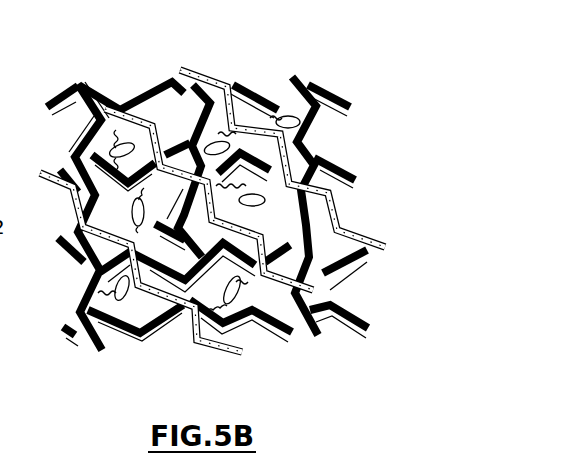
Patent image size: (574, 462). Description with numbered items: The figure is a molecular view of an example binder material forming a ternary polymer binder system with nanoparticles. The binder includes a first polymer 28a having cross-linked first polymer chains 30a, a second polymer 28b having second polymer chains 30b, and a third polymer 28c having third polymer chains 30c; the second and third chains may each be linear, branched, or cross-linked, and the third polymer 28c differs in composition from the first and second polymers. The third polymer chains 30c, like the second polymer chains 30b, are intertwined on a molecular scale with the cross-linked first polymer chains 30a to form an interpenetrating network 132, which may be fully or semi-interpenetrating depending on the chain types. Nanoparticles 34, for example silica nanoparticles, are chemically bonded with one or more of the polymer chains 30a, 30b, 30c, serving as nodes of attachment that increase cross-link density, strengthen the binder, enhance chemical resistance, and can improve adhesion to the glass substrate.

The interpenetrating network 132 is at (218, 211).
The nanoparticles 34 is at (205, 144).
The first polymer 28a is at (255, 97).
The second polymer 28b is at (83, 277).
The third polymer 28c is at (188, 330).
The first polymer chains 30a is at (334, 169).
The second polymer chains 30b is at (339, 316).
The third polymer chains 30c is at (338, 210).